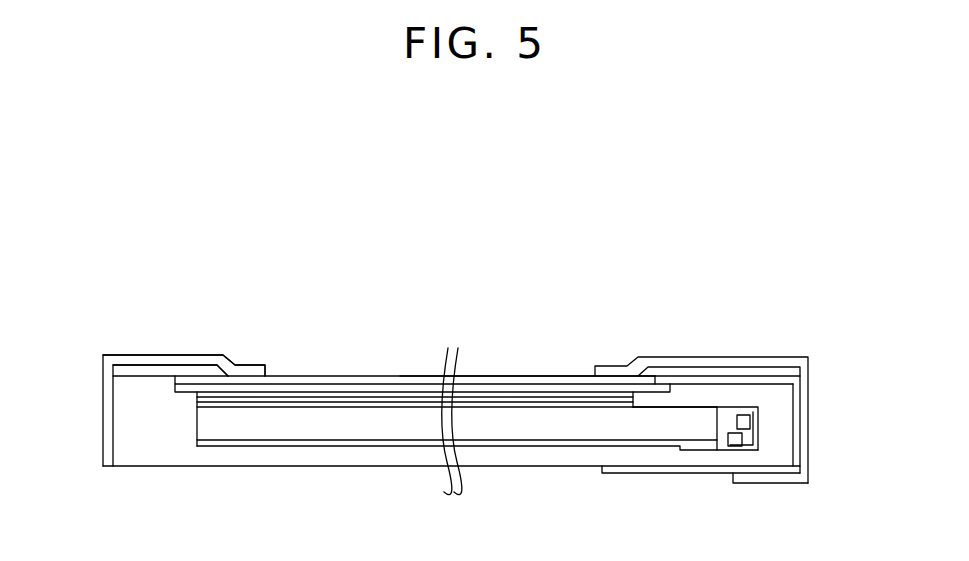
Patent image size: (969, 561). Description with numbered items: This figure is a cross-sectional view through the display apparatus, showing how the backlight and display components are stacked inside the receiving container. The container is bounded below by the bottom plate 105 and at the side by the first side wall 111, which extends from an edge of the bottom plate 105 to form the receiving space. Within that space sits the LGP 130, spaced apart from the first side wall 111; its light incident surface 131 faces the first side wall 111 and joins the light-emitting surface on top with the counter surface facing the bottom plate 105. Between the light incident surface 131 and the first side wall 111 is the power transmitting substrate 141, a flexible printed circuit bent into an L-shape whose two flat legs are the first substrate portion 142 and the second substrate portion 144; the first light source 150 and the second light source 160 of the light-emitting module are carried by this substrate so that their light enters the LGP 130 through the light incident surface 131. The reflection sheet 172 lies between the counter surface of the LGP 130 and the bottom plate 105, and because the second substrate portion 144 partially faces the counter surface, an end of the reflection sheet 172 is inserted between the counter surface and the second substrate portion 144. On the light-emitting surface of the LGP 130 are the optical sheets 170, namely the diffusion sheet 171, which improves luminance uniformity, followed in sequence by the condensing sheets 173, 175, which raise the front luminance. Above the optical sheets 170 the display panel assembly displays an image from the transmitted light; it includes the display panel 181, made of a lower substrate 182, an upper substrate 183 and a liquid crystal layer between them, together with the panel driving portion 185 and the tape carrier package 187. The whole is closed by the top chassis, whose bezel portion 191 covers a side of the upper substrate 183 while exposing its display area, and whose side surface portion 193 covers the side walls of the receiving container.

The bottom plate 105 is at (240, 467).
The first side wall 111 is at (788, 395).
The LGP 130 is at (300, 425).
The light incident surface 131 is at (707, 407).
The power transmitting substrate 141 is at (825, 437).
The first substrate portion 142 is at (755, 417).
The second substrate portion 144 is at (738, 447).
The first light source 150 is at (743, 415).
The second light source 160 is at (738, 450).
The optical sheet(s) 170 is at (422, 333).
The diffusion sheet 171 is at (320, 384).
The reflection sheet 172 is at (498, 447).
The condensing sheet 173 is at (358, 393).
The condensing sheet 175 is at (293, 297).
The display panel 181 is at (415, 324).
The lower substrate 182 is at (537, 384).
The upper substrate 183 is at (515, 298).
The panel driving portion 185 is at (613, 473).
The tape carrier package 187 is at (668, 381).
The bezel portion 191 is at (187, 363).
The side surface portion 193 is at (105, 408).